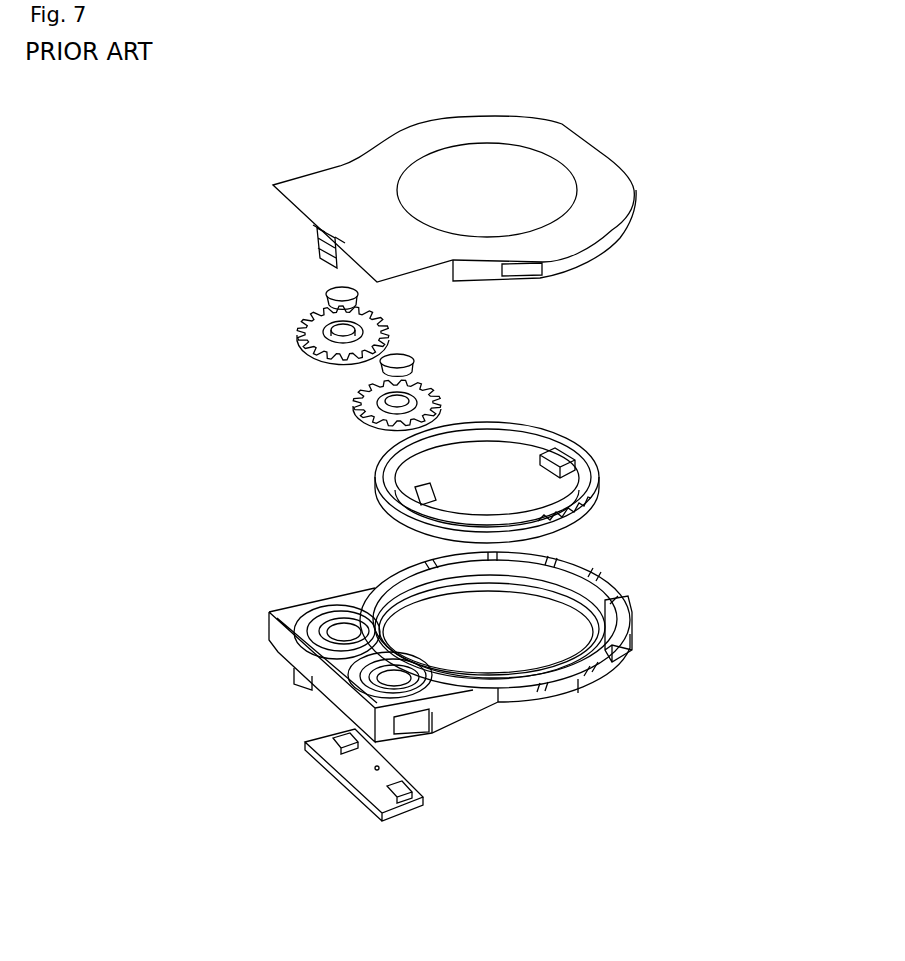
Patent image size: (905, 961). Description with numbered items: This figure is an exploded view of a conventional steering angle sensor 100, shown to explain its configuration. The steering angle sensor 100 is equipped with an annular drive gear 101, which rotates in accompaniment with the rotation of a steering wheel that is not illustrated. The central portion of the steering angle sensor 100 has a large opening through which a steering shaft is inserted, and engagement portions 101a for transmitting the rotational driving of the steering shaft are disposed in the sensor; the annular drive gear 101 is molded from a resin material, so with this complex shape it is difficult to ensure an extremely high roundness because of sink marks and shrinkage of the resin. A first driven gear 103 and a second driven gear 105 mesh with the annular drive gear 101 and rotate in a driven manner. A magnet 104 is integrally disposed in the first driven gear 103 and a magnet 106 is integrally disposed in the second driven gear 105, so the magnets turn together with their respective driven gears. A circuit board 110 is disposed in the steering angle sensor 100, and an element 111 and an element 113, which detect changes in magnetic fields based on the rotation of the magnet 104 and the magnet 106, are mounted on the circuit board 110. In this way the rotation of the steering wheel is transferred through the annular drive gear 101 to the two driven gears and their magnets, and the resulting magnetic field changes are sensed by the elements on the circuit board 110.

The steering angle sensor 100 is at (682, 139).
The annular drive gear 101 is at (607, 480).
The engagement portions 101a is at (538, 440).
The first driven gear 103 is at (417, 385).
The magnet 104 is at (415, 362).
The second driven gear 105 is at (390, 330).
The magnet 106 is at (362, 297).
The circuit board 110 is at (412, 812).
The element 111 is at (410, 787).
The element 113 is at (337, 733).